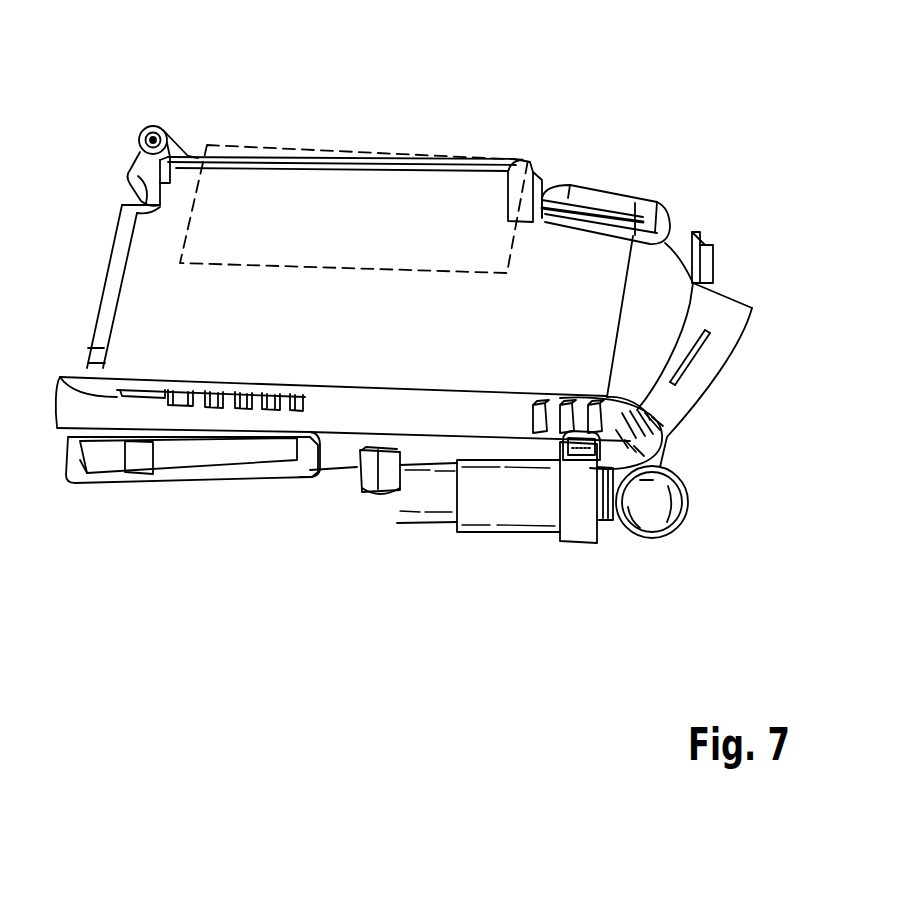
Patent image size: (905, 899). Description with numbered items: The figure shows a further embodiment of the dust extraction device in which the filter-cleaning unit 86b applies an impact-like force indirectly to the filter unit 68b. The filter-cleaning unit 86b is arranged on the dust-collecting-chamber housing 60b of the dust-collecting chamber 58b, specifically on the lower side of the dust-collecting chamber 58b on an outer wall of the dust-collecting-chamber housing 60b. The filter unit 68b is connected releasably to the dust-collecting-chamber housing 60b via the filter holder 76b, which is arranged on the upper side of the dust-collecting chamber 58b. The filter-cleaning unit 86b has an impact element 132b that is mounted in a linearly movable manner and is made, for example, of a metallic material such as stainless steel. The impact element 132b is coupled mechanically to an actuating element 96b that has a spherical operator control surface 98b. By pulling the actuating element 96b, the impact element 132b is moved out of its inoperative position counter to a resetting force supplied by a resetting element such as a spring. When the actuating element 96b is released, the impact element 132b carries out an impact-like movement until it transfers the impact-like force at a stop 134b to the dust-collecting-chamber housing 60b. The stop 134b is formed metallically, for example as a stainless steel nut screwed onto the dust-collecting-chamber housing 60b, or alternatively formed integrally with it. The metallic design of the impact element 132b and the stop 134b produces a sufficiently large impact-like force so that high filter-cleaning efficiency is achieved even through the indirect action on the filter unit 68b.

The dust-collecting chamber 58b is at (146, 108).
The filter unit 68b is at (400, 147).
The filter holder 76b is at (523, 160).
The dust-collecting-chamber housing 60b is at (200, 410).
The stop 134b is at (370, 473).
The impact element 132b is at (430, 495).
The filter-cleaning unit 86b is at (511, 552).
The actuating element 96b is at (642, 515).
The spherical operator control surface 98b is at (660, 515).